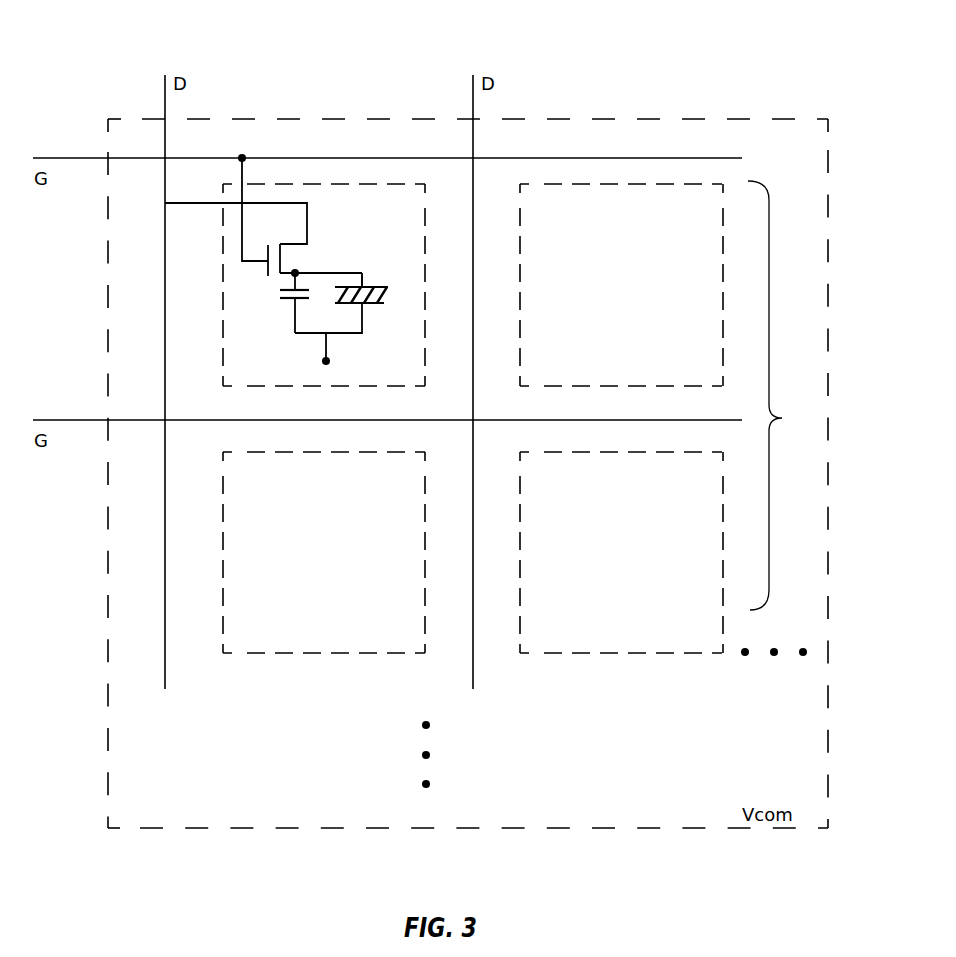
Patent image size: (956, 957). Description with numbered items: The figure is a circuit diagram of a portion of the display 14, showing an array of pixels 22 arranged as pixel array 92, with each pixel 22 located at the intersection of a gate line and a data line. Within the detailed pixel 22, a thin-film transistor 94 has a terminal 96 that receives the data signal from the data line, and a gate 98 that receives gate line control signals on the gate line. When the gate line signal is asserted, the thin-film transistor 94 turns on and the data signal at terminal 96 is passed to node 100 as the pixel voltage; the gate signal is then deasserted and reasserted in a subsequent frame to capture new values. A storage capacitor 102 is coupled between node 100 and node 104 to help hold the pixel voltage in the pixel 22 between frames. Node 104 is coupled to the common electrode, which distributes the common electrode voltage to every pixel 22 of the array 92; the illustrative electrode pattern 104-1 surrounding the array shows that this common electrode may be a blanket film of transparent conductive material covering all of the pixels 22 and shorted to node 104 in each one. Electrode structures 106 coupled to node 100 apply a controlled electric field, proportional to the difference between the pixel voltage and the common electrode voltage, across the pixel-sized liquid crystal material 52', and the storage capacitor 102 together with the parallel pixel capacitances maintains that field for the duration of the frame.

The display 14 is at (764, 57).
The pixel 22 is at (340, 184).
The pixel array 92 is at (779, 395).
The thin-film transistor 94 is at (258, 270).
The terminal 96 is at (307, 226).
The gate 98 is at (250, 262).
The node 100 is at (291, 277).
The storage capacitor 102 is at (289, 311).
The node 104 is at (333, 360).
The electrode pattern 104-1 is at (380, 829).
The electrode structures 106 is at (371, 286).
The liquid crystal material 52' is at (400, 301).